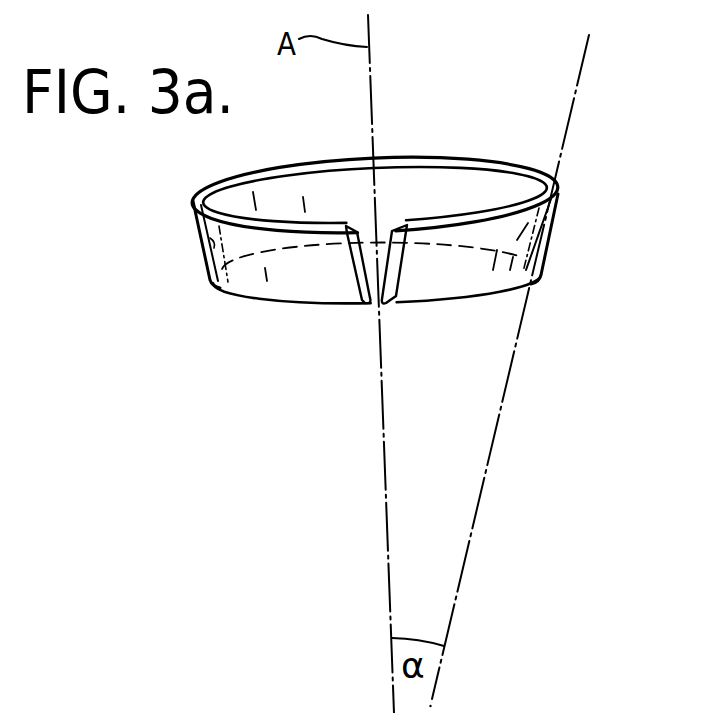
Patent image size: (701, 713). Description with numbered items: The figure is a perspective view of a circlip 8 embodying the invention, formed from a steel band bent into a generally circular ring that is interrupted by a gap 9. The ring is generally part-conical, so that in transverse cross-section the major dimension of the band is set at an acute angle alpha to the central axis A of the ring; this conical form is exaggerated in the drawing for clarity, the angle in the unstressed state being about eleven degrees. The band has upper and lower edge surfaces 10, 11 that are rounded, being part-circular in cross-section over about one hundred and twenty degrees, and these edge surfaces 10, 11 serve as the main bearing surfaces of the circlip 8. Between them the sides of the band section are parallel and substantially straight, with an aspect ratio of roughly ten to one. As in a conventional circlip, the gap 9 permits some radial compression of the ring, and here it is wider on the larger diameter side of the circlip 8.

The circlip 8 is at (202, 252).
The gap 9 is at (372, 270).
The upper edge surface 10 is at (485, 166).
The lower edge surface 11 is at (493, 292).